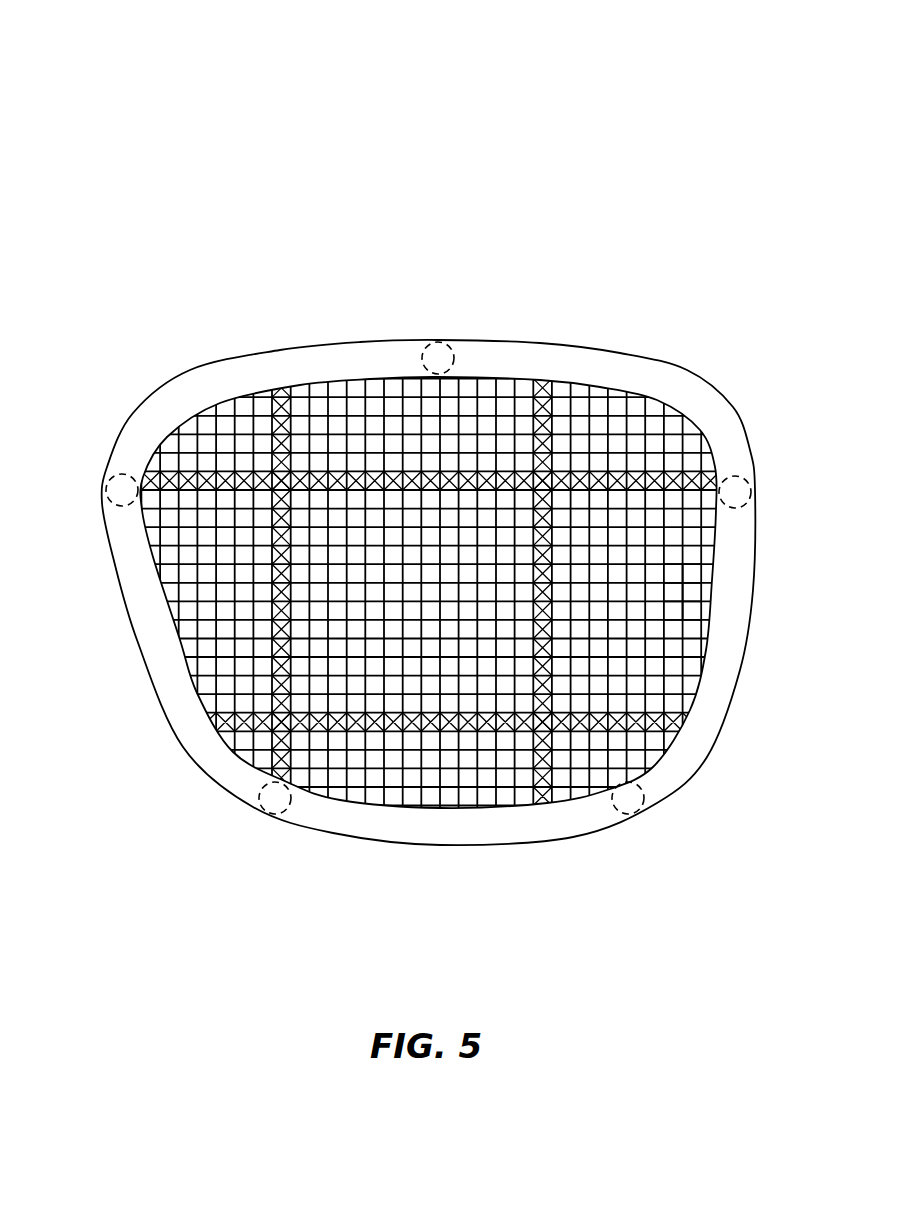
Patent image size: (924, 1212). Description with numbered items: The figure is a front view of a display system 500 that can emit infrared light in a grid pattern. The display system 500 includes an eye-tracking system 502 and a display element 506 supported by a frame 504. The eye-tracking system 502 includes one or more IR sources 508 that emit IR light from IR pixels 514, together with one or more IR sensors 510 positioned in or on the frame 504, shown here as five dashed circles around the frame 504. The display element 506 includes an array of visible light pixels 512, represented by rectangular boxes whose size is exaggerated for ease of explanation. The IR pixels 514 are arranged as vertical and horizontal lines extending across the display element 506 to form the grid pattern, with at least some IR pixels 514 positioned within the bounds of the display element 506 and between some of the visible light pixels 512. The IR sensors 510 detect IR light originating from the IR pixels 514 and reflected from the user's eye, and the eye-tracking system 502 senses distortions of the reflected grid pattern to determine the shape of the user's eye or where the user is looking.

The display system 500 is at (106, 90).
The eye-tracking system 502 is at (358, 240).
The frame 504 is at (562, 347).
The display element 506 is at (182, 614).
The IR sources 508 is at (270, 393).
The IR sensors 510 is at (422, 353).
The visible light pixels 512 is at (693, 623).
The IR pixels 514 is at (377, 473).